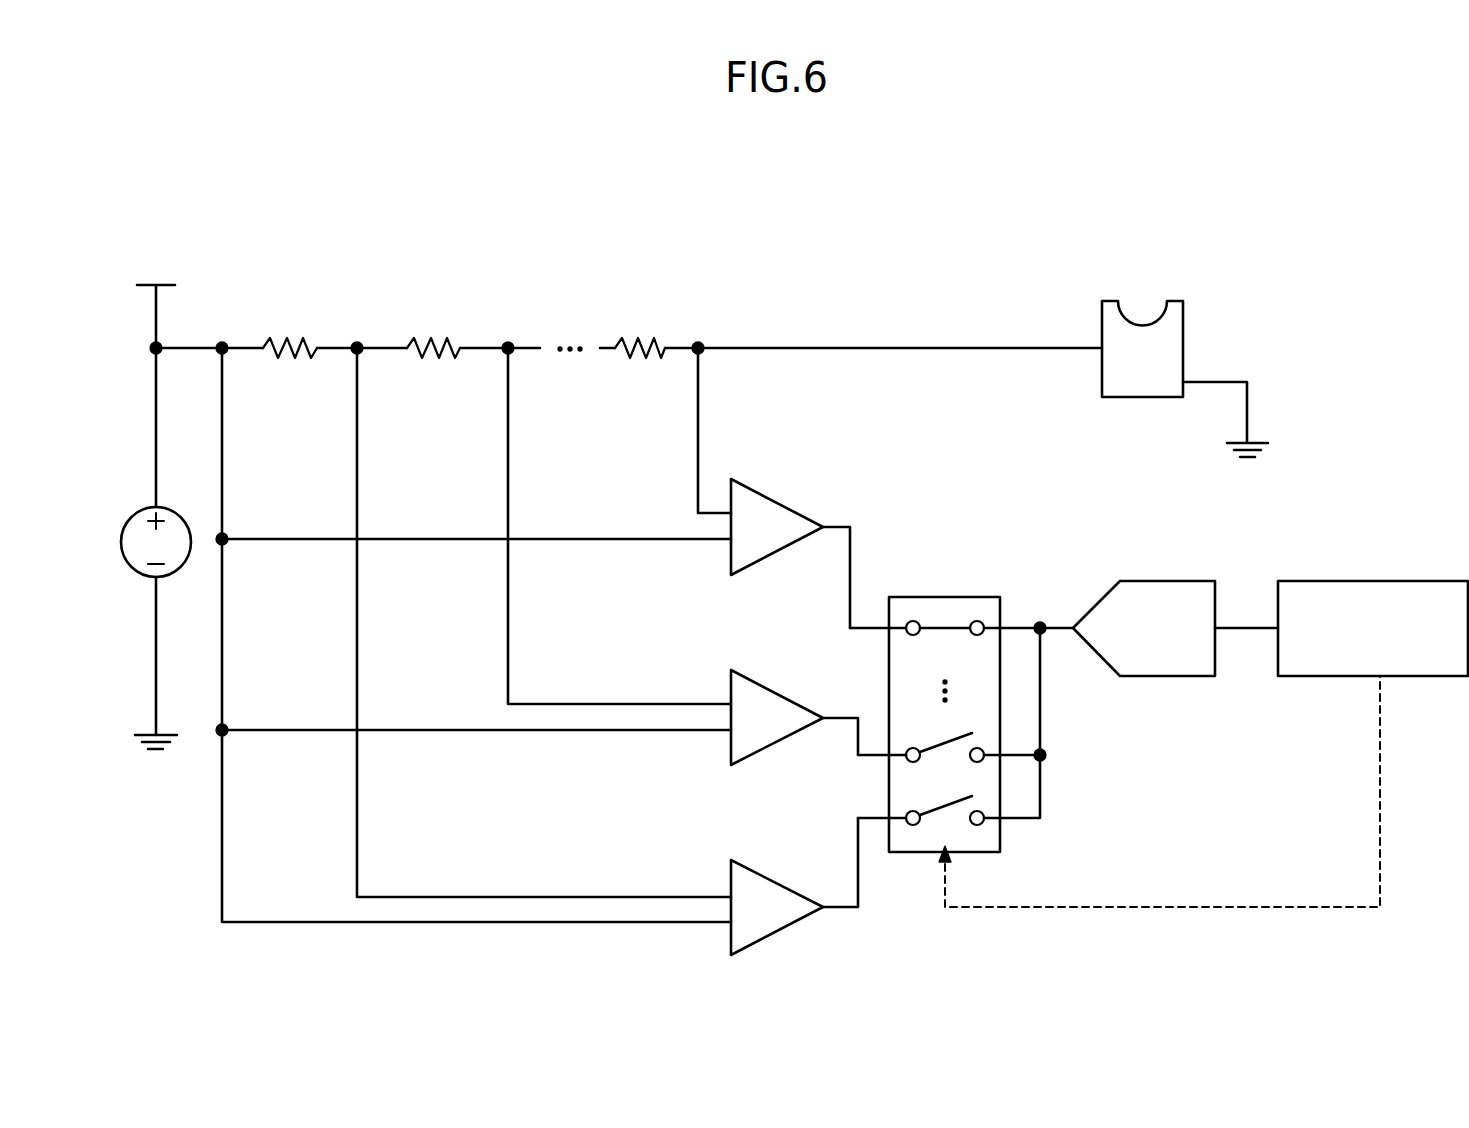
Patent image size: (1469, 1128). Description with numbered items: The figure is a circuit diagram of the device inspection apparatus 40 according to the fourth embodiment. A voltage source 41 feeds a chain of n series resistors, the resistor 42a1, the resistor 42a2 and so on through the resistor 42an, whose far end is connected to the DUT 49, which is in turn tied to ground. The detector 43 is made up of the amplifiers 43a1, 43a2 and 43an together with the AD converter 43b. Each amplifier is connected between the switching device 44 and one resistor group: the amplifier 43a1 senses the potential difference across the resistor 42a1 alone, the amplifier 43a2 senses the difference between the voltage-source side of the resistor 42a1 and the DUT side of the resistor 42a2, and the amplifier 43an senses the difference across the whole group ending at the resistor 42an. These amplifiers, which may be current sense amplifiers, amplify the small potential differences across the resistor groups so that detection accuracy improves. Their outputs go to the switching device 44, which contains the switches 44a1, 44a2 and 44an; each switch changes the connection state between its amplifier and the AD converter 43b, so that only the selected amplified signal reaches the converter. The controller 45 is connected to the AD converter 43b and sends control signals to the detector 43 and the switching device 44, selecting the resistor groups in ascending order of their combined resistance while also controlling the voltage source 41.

The device inspection apparatus 40 is at (383, 205).
The voltage source 41 is at (131, 518).
The resistor 42a1 is at (287, 333).
The resistor 42a2 is at (432, 333).
The resistor 42an is at (639, 333).
The detector 43 is at (1178, 688).
The amplifier 43an is at (778, 500).
The amplifier 43a2 is at (778, 690).
The amplifier 43a1 is at (778, 880).
The AD converter 43b is at (1168, 581).
The switching device 44 is at (920, 597).
The switch 44an is at (947, 628).
The switch 44a2 is at (943, 743).
The switch 44a1 is at (943, 806).
The controller 45 is at (1375, 581).
The DUT 49 is at (1143, 302).